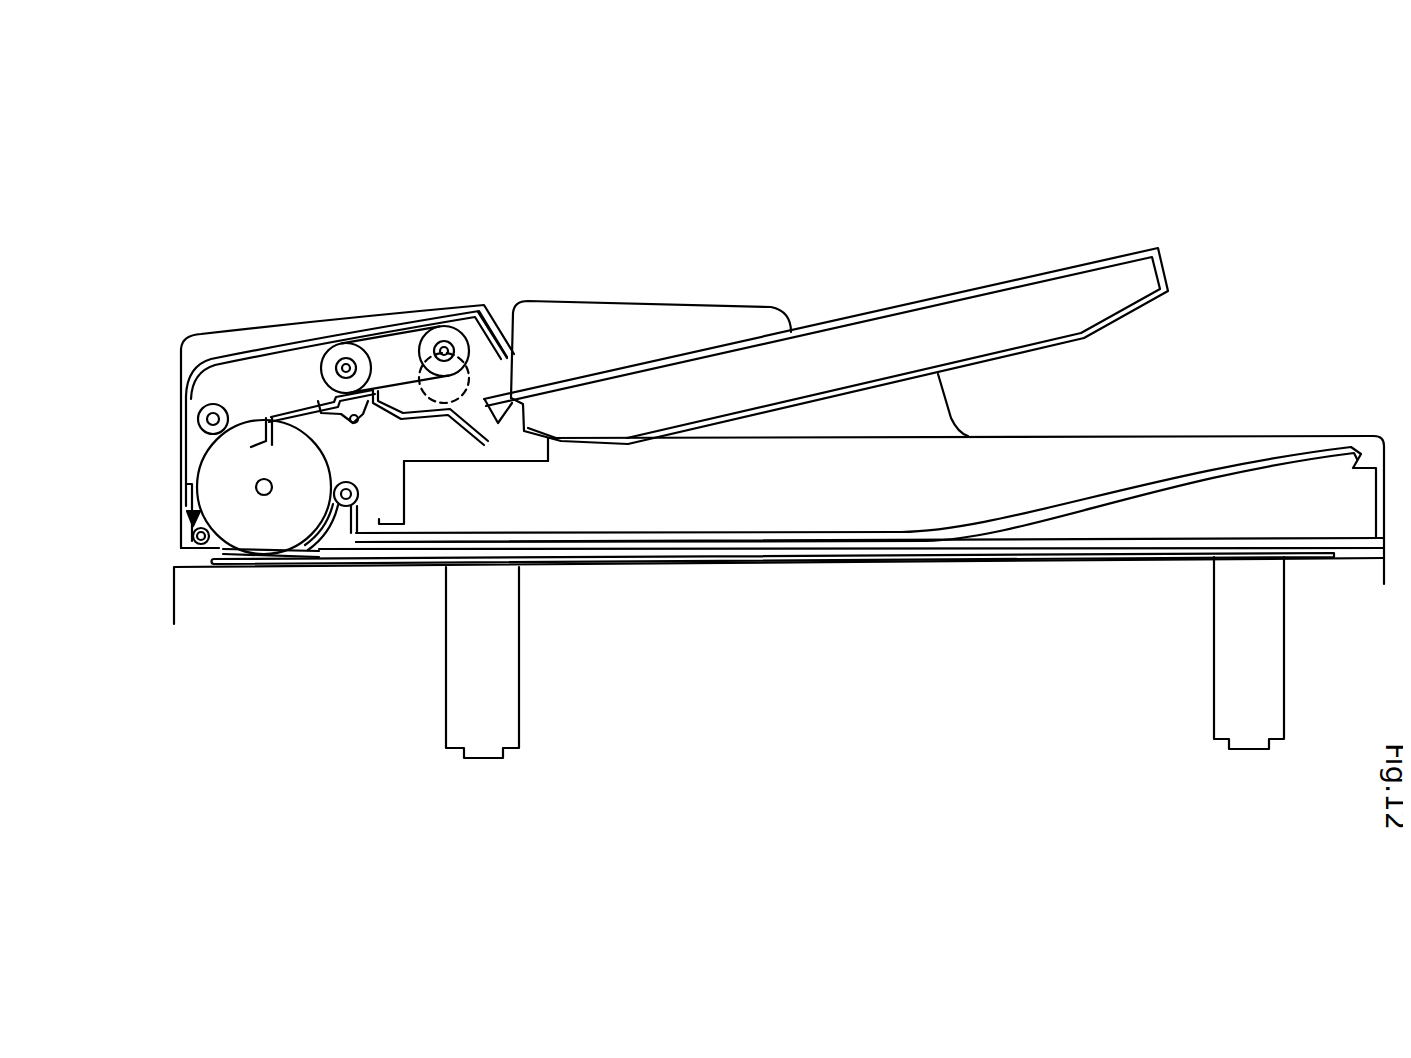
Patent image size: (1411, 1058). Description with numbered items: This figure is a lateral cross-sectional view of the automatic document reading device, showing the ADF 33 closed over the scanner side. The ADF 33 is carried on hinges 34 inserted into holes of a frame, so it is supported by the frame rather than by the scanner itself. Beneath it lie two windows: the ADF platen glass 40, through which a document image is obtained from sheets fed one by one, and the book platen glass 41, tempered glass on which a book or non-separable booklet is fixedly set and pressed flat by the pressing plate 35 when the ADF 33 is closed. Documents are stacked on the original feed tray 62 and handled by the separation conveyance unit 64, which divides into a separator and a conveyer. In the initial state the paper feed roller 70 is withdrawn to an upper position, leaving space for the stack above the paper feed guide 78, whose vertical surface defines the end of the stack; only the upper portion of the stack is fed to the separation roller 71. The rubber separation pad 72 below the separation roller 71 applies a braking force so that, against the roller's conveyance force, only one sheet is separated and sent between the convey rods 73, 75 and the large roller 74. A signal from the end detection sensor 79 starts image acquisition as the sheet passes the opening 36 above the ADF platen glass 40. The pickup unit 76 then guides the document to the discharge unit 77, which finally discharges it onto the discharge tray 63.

The ADF 33 is at (598, 234).
The hinges 34 is at (456, 690).
The pressing plate 35 is at (1133, 543).
The opening 36 is at (213, 562).
The ADF platen glass 40 is at (240, 568).
The book platen glass 41 is at (857, 556).
The original feed tray 62 is at (983, 278).
The discharge tray 63 is at (1138, 481).
The separation conveyance unit 64 is at (272, 340).
The paper feed roller 70 is at (441, 326).
The separation roller 71 is at (336, 345).
The separation pad 72 is at (321, 393).
The convey rod 73 is at (200, 410).
The large roller 74 is at (212, 466).
The convey rod 75 is at (178, 542).
The pickup unit 76 is at (283, 557).
The discharge unit 77 is at (342, 472).
The paper feed guide 78 is at (397, 421).
The end detection sensor 79 is at (185, 516).